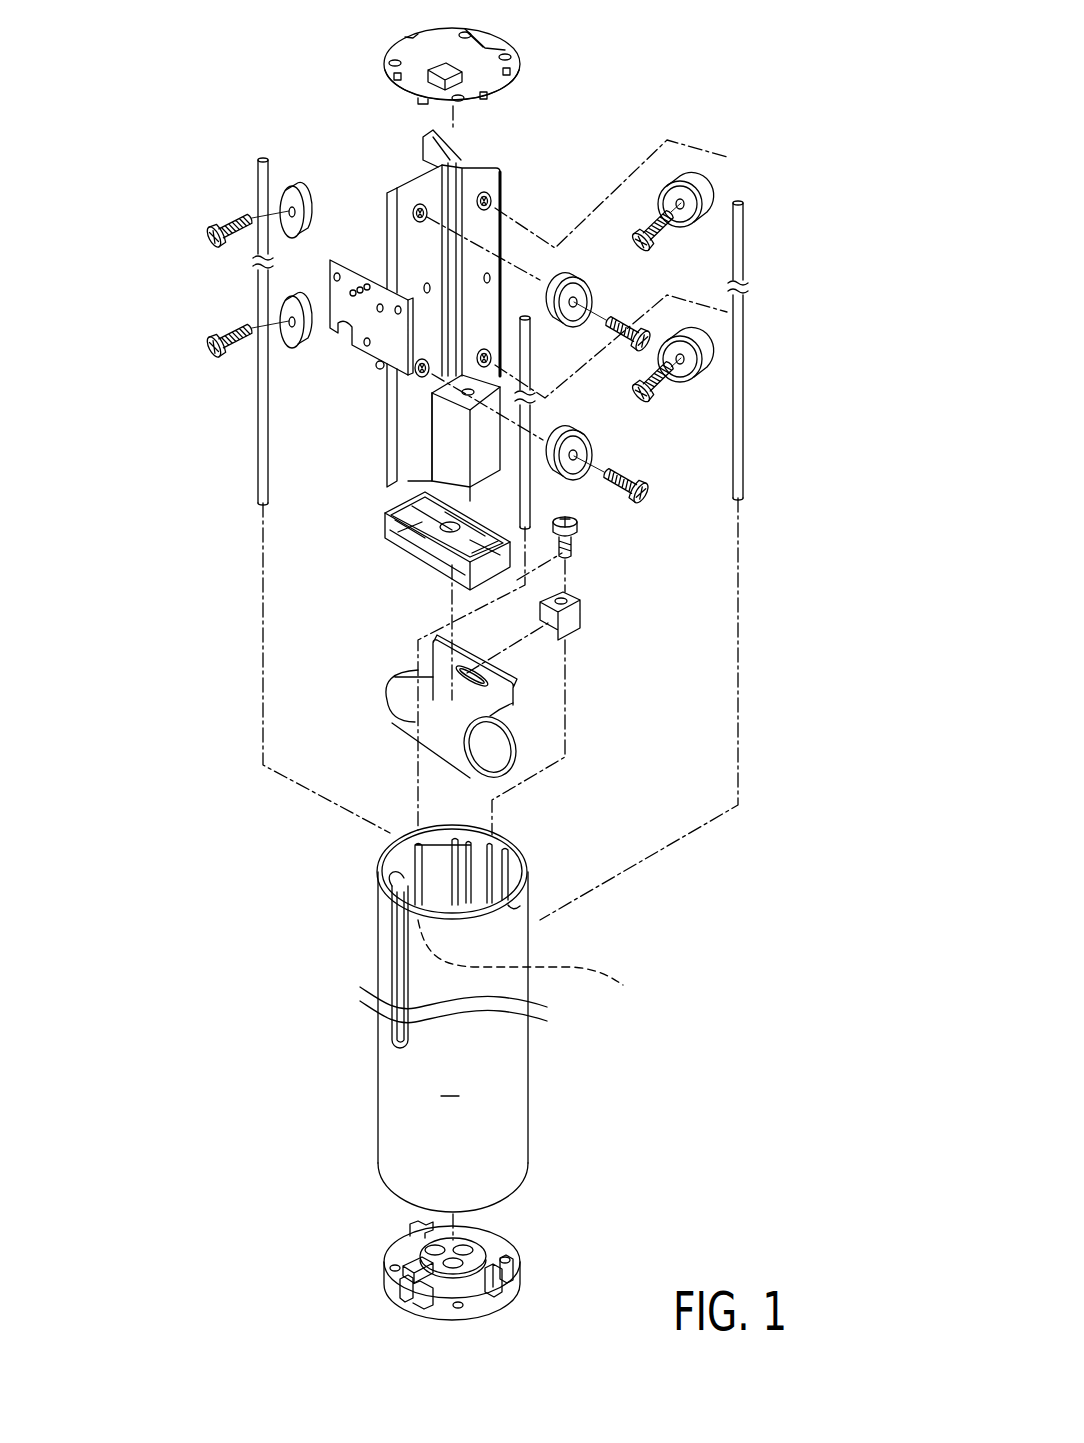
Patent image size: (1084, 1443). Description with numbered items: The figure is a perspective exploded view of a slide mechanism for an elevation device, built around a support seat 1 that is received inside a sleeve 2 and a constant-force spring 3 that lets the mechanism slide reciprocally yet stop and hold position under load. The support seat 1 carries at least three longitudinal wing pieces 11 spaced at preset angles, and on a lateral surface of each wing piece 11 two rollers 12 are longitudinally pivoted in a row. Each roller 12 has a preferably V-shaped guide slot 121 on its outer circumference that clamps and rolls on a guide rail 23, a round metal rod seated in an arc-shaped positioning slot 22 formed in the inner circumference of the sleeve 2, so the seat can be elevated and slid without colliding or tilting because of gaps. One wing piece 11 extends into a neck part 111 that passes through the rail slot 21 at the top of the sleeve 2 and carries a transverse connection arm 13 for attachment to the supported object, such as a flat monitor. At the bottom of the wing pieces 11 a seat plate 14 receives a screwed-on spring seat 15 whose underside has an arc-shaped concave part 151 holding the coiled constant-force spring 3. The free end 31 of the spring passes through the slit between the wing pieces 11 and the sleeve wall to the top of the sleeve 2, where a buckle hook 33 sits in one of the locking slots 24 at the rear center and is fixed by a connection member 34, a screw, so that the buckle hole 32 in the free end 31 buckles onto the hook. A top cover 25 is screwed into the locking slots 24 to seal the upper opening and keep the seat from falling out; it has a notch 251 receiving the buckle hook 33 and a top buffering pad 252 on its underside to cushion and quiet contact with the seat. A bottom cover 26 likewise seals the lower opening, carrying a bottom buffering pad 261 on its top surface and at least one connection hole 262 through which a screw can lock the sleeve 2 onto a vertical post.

The support seat 1 is at (465, 298).
The wing piece 11 is at (497, 220).
The neck part 111 is at (388, 270).
The roller 12 is at (280, 200).
The guide slot 121 is at (297, 182).
The connection arm 13 is at (380, 355).
The seat plate 14 is at (482, 413).
The spring seat 15 is at (489, 557).
The arc-shaped concave part 151 is at (425, 568).
The sleeve 2 is at (471, 994).
The rail slot 21 is at (397, 933).
The positioning slot 22 is at (403, 853).
The guide rail 23 is at (258, 388).
The locking slot 24 is at (500, 840).
The top cover 25 is at (463, 63).
The notch 251 is at (490, 49).
The top buffering pad 252 is at (394, 96).
The bottom cover 26 is at (442, 1239).
The bottom buffering pad 261 is at (390, 1252).
The connection hole 262 is at (507, 1267).
The constant-force spring 3 is at (437, 693).
The free end 31 is at (500, 653).
The buckle hole 32 is at (467, 663).
The buckle hook 33 is at (577, 600).
The connection member 34 is at (572, 522).